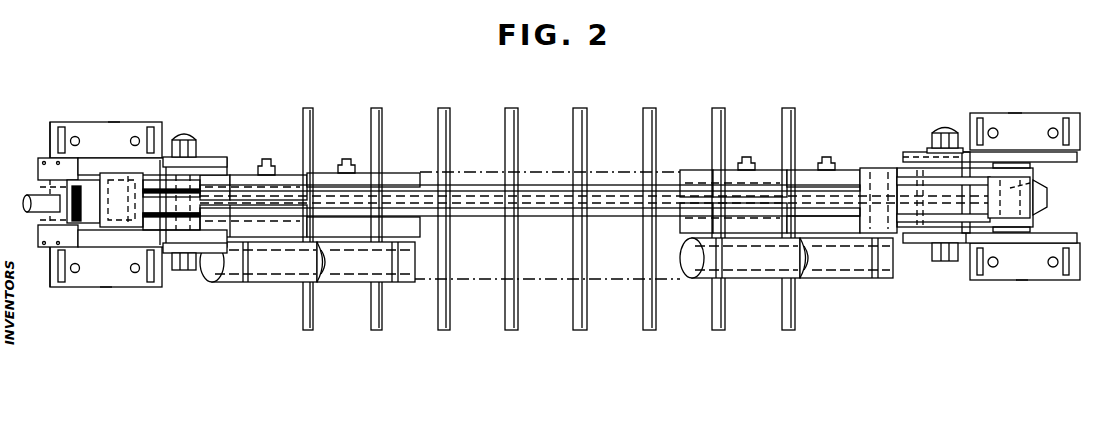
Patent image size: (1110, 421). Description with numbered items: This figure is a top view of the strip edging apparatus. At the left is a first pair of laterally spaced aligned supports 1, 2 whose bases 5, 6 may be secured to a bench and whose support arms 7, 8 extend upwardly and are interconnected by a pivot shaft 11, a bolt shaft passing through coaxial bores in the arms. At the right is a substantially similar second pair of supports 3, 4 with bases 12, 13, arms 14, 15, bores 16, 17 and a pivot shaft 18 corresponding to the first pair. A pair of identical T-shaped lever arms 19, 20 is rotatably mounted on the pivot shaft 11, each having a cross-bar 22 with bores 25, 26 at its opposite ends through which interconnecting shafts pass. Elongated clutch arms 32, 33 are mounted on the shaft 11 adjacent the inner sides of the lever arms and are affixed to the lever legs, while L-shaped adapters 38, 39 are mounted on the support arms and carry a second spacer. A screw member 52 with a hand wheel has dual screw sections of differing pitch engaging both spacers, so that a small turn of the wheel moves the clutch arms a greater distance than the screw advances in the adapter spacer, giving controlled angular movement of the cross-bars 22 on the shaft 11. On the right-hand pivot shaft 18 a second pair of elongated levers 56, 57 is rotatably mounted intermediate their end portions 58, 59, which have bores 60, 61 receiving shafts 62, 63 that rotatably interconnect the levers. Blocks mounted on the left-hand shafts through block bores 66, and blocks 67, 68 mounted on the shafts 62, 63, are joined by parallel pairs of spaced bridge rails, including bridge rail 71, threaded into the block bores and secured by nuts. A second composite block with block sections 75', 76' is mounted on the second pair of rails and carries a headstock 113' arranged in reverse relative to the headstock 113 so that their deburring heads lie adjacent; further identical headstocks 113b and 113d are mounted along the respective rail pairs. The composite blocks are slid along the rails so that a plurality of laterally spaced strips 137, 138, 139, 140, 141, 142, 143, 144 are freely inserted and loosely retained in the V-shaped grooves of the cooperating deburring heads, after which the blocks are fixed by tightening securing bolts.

The support 1 is at (104, 287).
The support 2 is at (108, 122).
The support 3 is at (1016, 113).
The support 4 is at (1022, 280).
The base 5 is at (82, 287).
The base 6 is at (85, 125).
The support arm 7 is at (92, 158).
The support arm 8 is at (98, 250).
The pivot shaft 11 is at (185, 138).
The base 12 is at (1043, 120).
The base 13 is at (1046, 280).
The arm 14 is at (1078, 156).
The arm 15 is at (1078, 238).
The bore 16 is at (936, 158).
The bore 17 is at (932, 246).
The pivot shaft 18 is at (945, 127).
The lever arm 19 is at (158, 172).
The lever arm 20 is at (158, 236).
The cross-bar 22 is at (125, 175).
The bore 25 is at (107, 175).
The bore 26 is at (106, 237).
The clutch arm 32 is at (44, 186).
The clutch arm 33 is at (44, 222).
The L-shaped adapter 38 is at (40, 248).
The L-shaped adapter 39 is at (40, 160).
The screw member 52 is at (34, 199).
The lever 56 is at (966, 230).
The lever 57 is at (966, 162).
The end portion 58 is at (852, 174).
The end portion 59 is at (1066, 166).
The bore 60 is at (856, 174).
The bore 61 is at (995, 165).
The shaft 62 is at (877, 180).
The shaft 63 is at (1046, 190).
The block bore 66 is at (96, 220).
The block 67 is at (860, 196).
The block 68 is at (1045, 198).
The bridge rail 71 is at (619, 209).
The block section 75' is at (366, 163).
The block section 76' is at (374, 227).
The headstock 113 is at (258, 276).
The headstock 113' is at (366, 276).
The headstock 113b is at (758, 279).
The headstock 113d is at (845, 279).
The strip 137 is at (309, 108).
The strip 138 is at (376, 108).
The strip 139 is at (444, 108).
The strip 140 is at (510, 108).
The strip 141 is at (579, 108).
The strip 142 is at (649, 108).
The strip 143 is at (718, 108).
The strip 144 is at (788, 108).